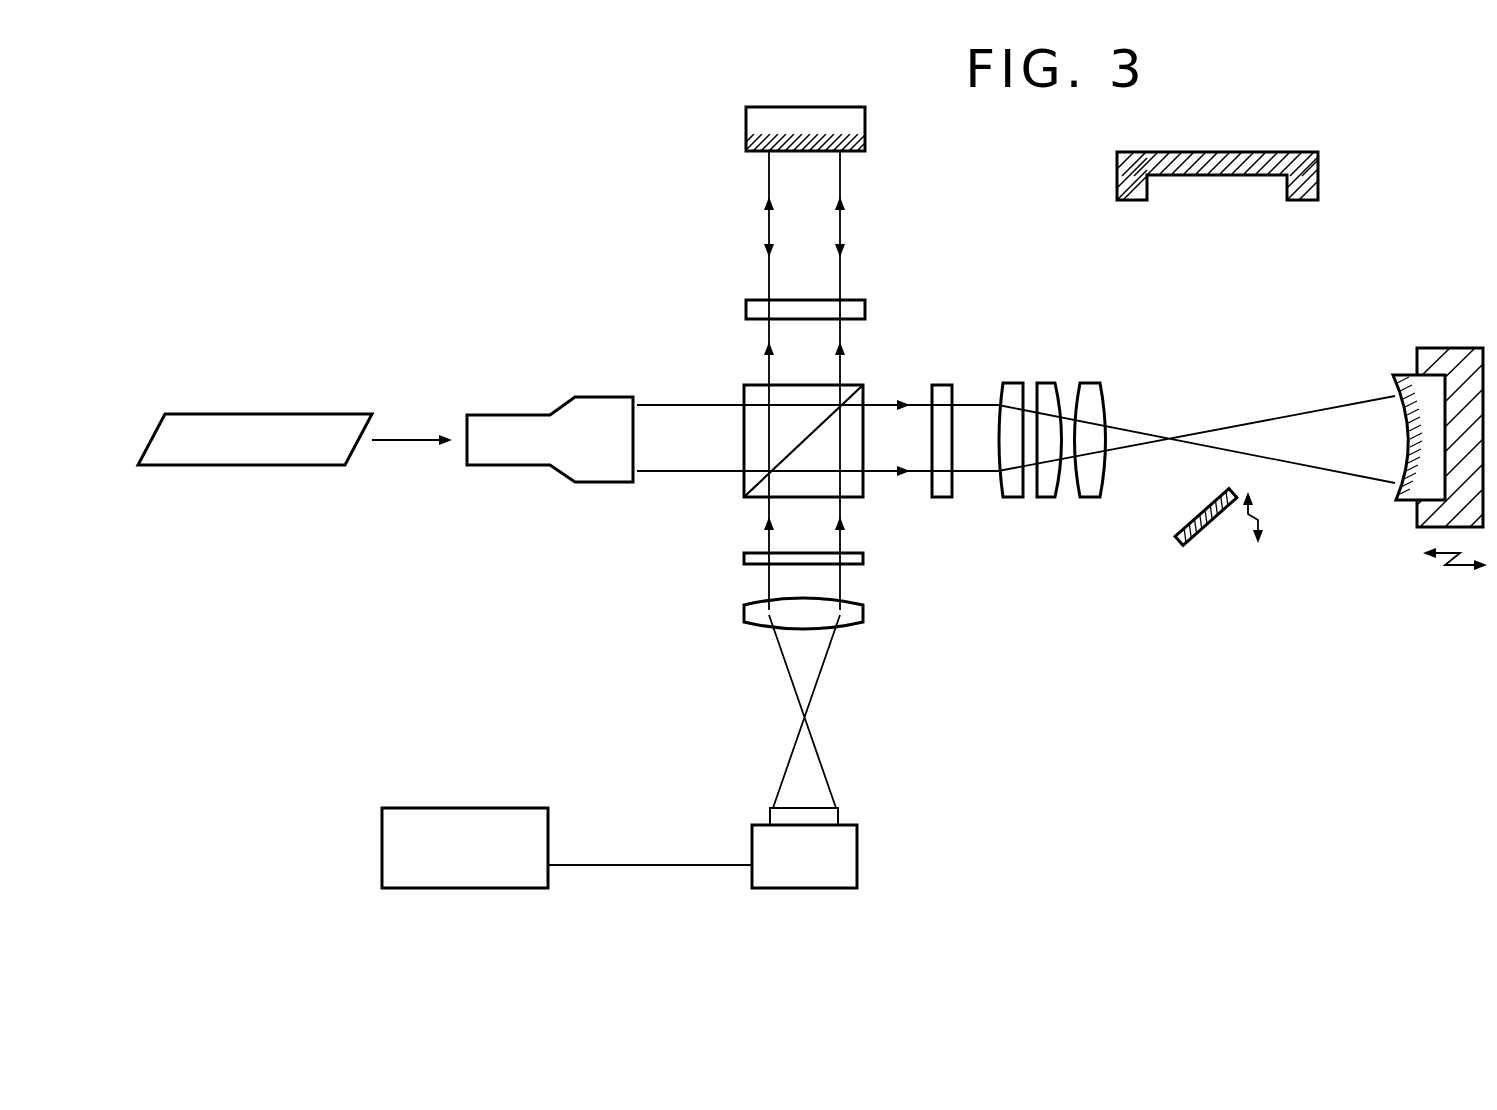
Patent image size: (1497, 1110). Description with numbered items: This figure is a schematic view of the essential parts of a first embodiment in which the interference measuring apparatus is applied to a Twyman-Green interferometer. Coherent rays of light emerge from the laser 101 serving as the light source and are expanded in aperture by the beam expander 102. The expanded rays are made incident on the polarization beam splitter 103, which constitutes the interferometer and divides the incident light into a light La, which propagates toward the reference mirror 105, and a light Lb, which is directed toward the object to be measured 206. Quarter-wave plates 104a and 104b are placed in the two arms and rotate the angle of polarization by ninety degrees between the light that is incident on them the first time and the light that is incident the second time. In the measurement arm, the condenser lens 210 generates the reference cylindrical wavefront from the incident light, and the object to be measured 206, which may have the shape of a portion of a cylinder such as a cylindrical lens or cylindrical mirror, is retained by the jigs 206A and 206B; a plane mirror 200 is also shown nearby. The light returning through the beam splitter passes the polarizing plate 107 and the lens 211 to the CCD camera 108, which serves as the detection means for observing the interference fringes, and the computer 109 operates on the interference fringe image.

The laser 101 is at (270, 425).
The beam expander 102 is at (535, 428).
The polarization beam splitter 103 is at (758, 392).
The quarter-wave plate 104a is at (858, 300).
The quarter-wave plate 104b is at (943, 385).
The reference mirror 105 is at (750, 152).
The polarizing plate 107 is at (744, 557).
The CCD camera 108 is at (845, 850).
The computer 109 is at (540, 808).
The plane mirror 200 is at (1200, 548).
The object to be measured 206 is at (1395, 490).
The jig 206A is at (1445, 348).
The jig 206B is at (1318, 175).
The condenser lens 210 is at (1105, 512).
The lens 211 is at (858, 615).
The light La is at (842, 336).
The light Lb is at (888, 473).